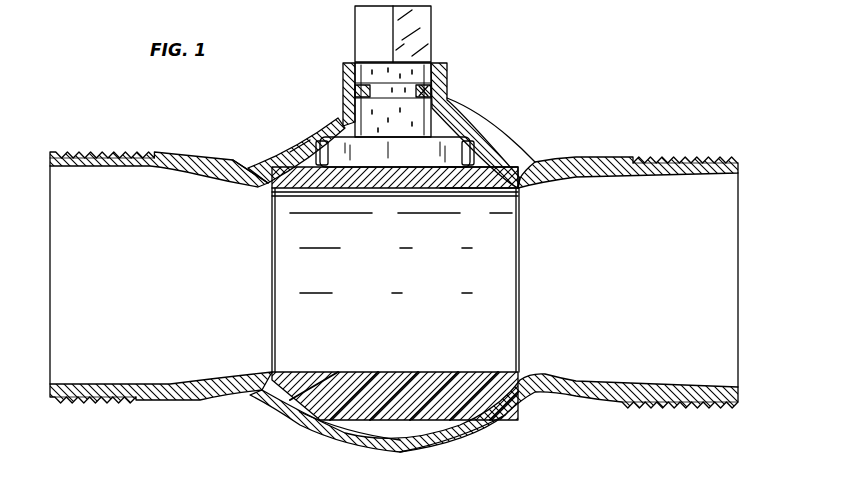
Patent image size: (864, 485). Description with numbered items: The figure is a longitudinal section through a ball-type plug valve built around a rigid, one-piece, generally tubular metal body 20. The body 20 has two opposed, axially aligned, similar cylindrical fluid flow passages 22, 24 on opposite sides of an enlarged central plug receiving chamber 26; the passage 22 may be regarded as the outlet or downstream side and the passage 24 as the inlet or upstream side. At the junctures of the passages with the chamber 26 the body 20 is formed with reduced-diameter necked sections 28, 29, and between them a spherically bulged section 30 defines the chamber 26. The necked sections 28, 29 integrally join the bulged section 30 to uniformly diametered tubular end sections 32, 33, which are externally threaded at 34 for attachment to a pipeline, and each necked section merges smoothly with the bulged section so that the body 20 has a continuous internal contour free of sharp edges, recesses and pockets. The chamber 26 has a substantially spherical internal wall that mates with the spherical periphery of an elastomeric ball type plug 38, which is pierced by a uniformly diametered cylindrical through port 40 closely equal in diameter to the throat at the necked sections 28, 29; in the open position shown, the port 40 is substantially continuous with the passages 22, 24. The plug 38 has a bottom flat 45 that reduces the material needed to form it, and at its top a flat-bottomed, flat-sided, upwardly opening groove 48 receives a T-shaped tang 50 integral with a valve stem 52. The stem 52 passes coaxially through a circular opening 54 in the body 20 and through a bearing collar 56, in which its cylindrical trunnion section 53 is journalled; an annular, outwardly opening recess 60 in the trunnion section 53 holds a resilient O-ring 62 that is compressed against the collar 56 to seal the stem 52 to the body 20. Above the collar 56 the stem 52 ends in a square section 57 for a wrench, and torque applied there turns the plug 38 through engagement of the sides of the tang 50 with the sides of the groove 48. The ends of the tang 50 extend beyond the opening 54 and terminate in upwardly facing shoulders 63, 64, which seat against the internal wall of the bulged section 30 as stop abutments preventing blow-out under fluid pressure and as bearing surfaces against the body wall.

The body 20 is at (392, 284).
The fluid flow passage 22 is at (514, 288).
The fluid flow passage 24 is at (58, 392).
The plug receiving chamber 26 is at (492, 406).
The necked section 28 is at (628, 156).
The necked section 29 is at (268, 160).
The spherically bulged section 30 is at (462, 126).
The tubular end section 32 is at (614, 157).
The tubular end section 33 is at (172, 153).
The external threads 34 is at (76, 155).
The ball type plug 38 is at (345, 432).
The through port 40 is at (425, 372).
The bottom flat 45 is at (436, 440).
The groove 48 is at (360, 178).
The tang 50 is at (447, 170).
The valve stem 52 is at (419, 72).
The trunnion section 53 is at (391, 127).
The circular opening 54 is at (331, 122).
The bearing collar 56 is at (343, 90).
The square section 57 is at (426, 30).
The annular recess 60 is at (422, 96).
The O-ring 62 is at (434, 92).
The shoulder 63 is at (310, 136).
The shoulder 64 is at (482, 141).